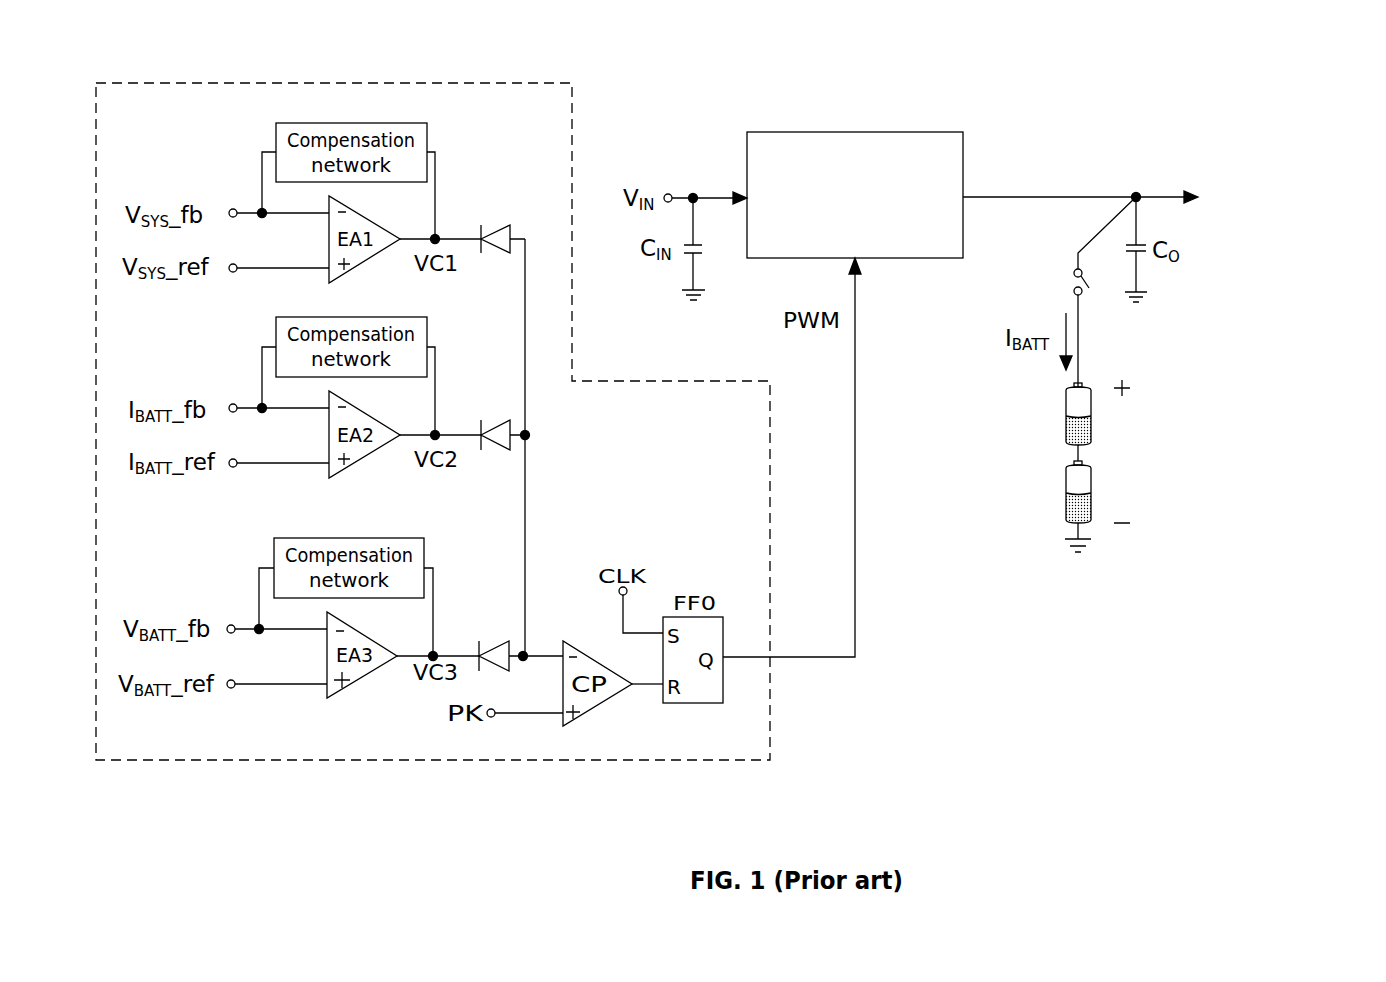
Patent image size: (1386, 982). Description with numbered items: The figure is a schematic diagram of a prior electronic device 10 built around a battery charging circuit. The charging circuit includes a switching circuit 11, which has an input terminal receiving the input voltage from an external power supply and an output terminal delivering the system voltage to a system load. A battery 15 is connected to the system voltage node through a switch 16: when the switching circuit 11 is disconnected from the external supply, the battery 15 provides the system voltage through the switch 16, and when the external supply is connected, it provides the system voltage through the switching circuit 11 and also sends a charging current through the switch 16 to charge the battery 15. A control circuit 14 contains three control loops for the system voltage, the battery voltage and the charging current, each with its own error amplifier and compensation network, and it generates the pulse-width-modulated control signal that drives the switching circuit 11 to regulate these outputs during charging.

The electronic device 10 is at (1138, 73).
The switching circuit 11 is at (843, 221).
The control circuit 14 is at (677, 461).
The battery 15 is at (1058, 451).
The switch 16 is at (1068, 285).